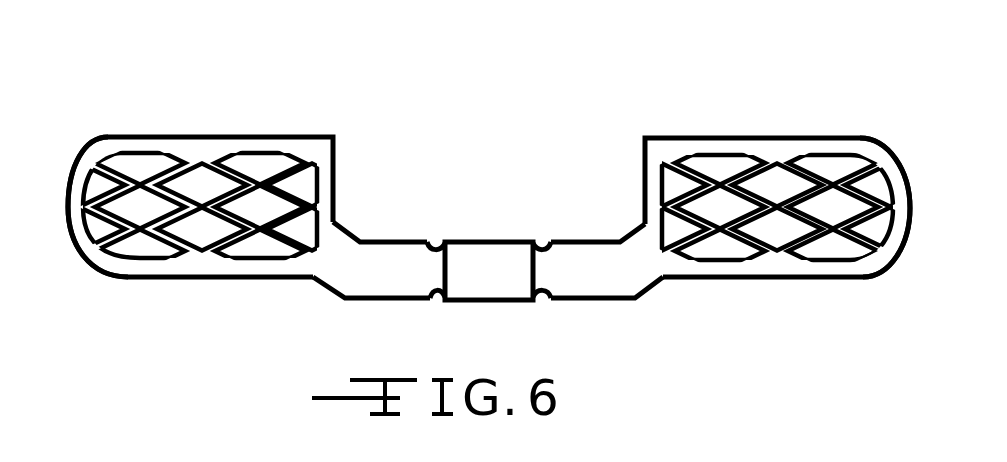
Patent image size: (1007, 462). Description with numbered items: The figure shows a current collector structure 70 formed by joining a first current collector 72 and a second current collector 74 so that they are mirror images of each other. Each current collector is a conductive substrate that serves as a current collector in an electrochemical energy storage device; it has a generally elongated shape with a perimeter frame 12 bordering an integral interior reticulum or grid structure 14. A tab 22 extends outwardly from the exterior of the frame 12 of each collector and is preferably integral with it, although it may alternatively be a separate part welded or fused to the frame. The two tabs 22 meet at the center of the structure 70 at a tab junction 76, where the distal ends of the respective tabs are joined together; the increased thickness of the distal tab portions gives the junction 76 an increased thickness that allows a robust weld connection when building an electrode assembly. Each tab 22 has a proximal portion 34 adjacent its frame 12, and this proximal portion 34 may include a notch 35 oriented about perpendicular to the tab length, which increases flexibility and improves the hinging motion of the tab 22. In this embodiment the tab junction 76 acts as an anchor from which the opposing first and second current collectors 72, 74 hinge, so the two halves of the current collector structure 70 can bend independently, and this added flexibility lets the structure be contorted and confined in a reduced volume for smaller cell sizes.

The current collector structure 70 is at (485, 190).
The perimeter frame 12 is at (203, 148).
The interior reticulum or grid structure 14 is at (260, 170).
The tab 22 is at (387, 258).
The proximal portion of the tab 34 is at (583, 260).
The notch 35 is at (437, 245).
The first current collector 72 is at (832, 153).
The second current collector 74 is at (140, 148).
The tab junction 76 is at (503, 263).